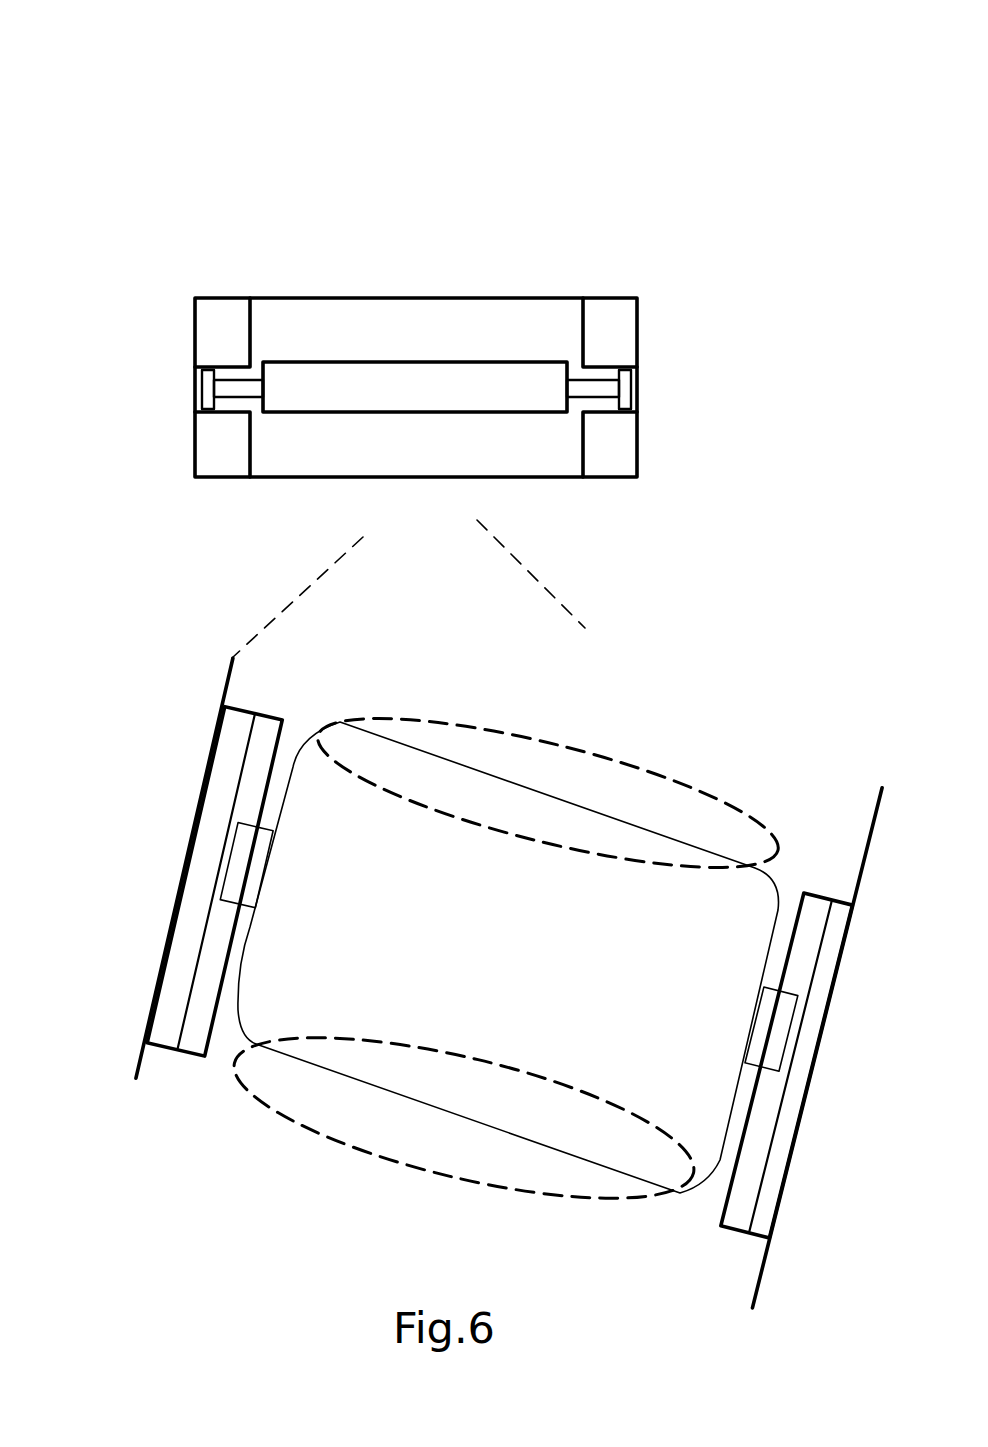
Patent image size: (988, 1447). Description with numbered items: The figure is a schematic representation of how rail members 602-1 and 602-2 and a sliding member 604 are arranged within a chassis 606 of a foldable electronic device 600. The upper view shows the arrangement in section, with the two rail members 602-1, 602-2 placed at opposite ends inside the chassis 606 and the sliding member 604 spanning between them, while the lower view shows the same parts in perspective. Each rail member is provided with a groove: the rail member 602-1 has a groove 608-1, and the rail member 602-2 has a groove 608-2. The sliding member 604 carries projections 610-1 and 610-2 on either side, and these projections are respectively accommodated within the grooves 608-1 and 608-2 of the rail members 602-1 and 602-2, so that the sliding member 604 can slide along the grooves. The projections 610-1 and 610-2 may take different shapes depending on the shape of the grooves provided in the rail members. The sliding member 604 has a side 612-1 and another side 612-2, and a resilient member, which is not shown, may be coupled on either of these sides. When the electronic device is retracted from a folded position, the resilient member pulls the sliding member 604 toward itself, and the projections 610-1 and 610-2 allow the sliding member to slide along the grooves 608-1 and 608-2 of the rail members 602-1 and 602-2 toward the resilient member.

The foldable electronic device 600 is at (119, 52).
The rail member 602-1 is at (613, 310).
The rail member 602-2 is at (213, 315).
The sliding member 604 is at (390, 362).
The chassis 606 is at (640, 424).
The groove 608-1 is at (600, 403).
The groove 608-2 is at (222, 402).
The projection 610-1 is at (631, 348).
The projection 610-2 is at (212, 378).
The side of the sliding member 612-1 is at (663, 783).
The another side of the sliding member 612-2 is at (347, 1143).